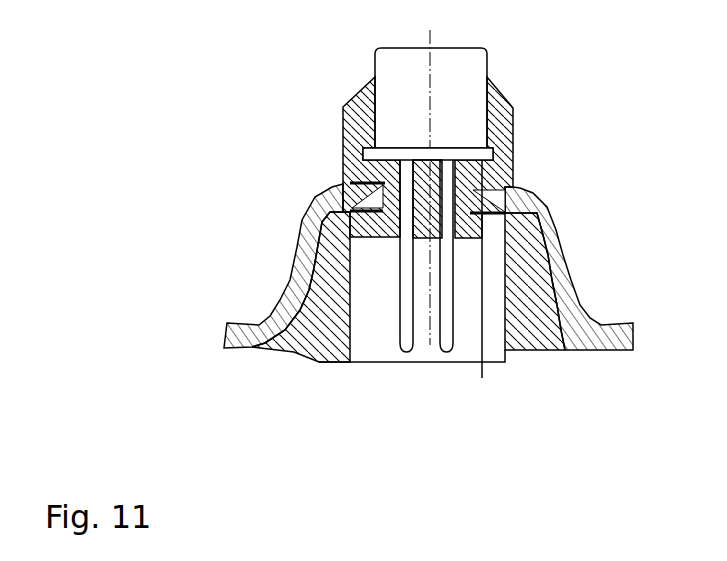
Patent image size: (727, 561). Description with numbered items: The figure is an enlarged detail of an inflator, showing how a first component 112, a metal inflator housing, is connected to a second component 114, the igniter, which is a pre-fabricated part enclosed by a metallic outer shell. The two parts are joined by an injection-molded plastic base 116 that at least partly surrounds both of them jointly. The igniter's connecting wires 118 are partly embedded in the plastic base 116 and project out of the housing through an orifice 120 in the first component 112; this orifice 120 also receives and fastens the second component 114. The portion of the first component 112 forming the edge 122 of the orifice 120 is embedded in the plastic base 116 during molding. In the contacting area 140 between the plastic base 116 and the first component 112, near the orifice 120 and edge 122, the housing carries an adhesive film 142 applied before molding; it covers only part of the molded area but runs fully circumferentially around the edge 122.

The first component 112 is at (250, 335).
The second component 114 is at (488, 52).
The plastic base 116 is at (547, 346).
The connecting wires 118 is at (442, 343).
The orifice 120 is at (380, 184).
The edge 122 is at (362, 190).
The contacting area 140 is at (498, 160).
The adhesive film 142 is at (473, 189).